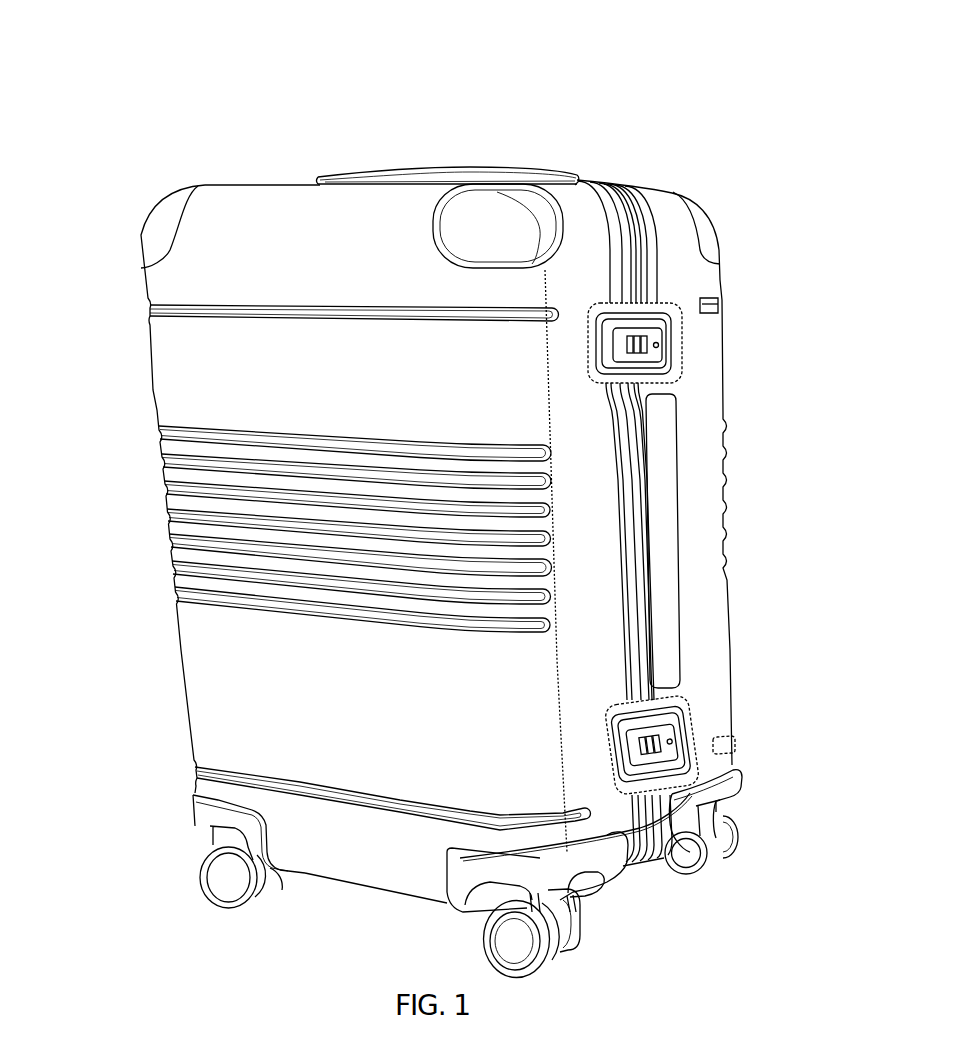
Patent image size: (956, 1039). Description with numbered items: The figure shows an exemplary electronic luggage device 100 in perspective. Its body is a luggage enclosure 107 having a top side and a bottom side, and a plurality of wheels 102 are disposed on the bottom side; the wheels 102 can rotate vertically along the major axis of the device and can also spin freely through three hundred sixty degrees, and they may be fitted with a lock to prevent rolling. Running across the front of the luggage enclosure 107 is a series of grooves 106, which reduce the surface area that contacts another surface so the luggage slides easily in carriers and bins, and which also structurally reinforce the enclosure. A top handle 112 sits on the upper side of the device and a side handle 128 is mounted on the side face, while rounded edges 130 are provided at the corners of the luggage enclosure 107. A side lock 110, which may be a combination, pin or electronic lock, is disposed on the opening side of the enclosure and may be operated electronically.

The electronic luggage device 100 is at (245, 86).
The wheels 102 is at (225, 892).
The grooves 106 is at (170, 462).
The luggage enclosure 107 is at (223, 698).
The side lock 110 is at (670, 356).
The top handle 112 is at (455, 167).
The side handle 128 is at (670, 515).
The rounded edges 130 is at (147, 203).